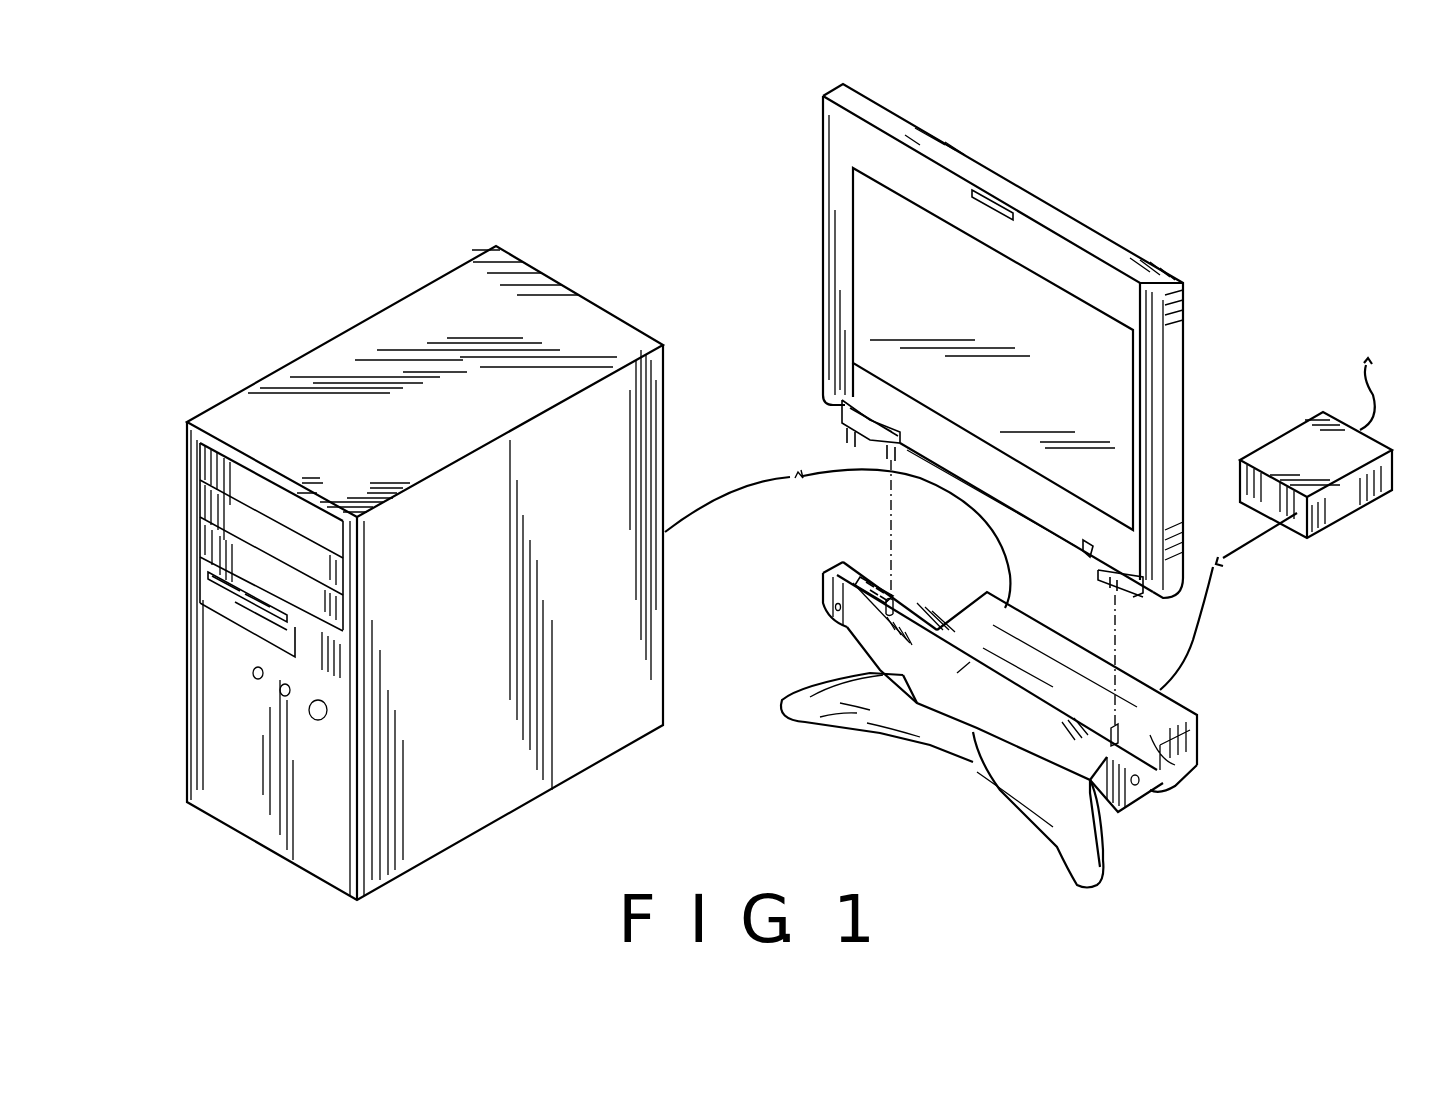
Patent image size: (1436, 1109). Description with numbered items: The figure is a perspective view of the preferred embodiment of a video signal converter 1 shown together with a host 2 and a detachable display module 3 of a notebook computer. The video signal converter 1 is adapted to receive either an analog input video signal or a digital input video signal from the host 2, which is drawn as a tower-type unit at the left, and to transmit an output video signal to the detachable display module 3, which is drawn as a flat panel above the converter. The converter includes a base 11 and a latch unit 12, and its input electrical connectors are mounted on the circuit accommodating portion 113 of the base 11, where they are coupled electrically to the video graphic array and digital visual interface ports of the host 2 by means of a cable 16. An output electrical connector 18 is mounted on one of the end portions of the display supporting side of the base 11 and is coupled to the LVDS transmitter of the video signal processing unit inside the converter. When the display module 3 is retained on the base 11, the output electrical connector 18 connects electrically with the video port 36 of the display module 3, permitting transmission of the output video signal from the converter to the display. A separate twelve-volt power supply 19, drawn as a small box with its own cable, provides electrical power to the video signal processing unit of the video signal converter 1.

The video signal converter 1 is at (1029, 725).
The host 2 is at (325, 321).
The detachable display module 3 is at (971, 341).
The base 11 is at (987, 727).
The latch unit 12 is at (1016, 687).
The cable 16 is at (722, 502).
The output electrical connector 18 is at (833, 618).
The 12-Volt power supply 19 is at (1330, 512).
The video port 36 is at (843, 430).
The circuit accommodating portion 113 is at (1173, 712).